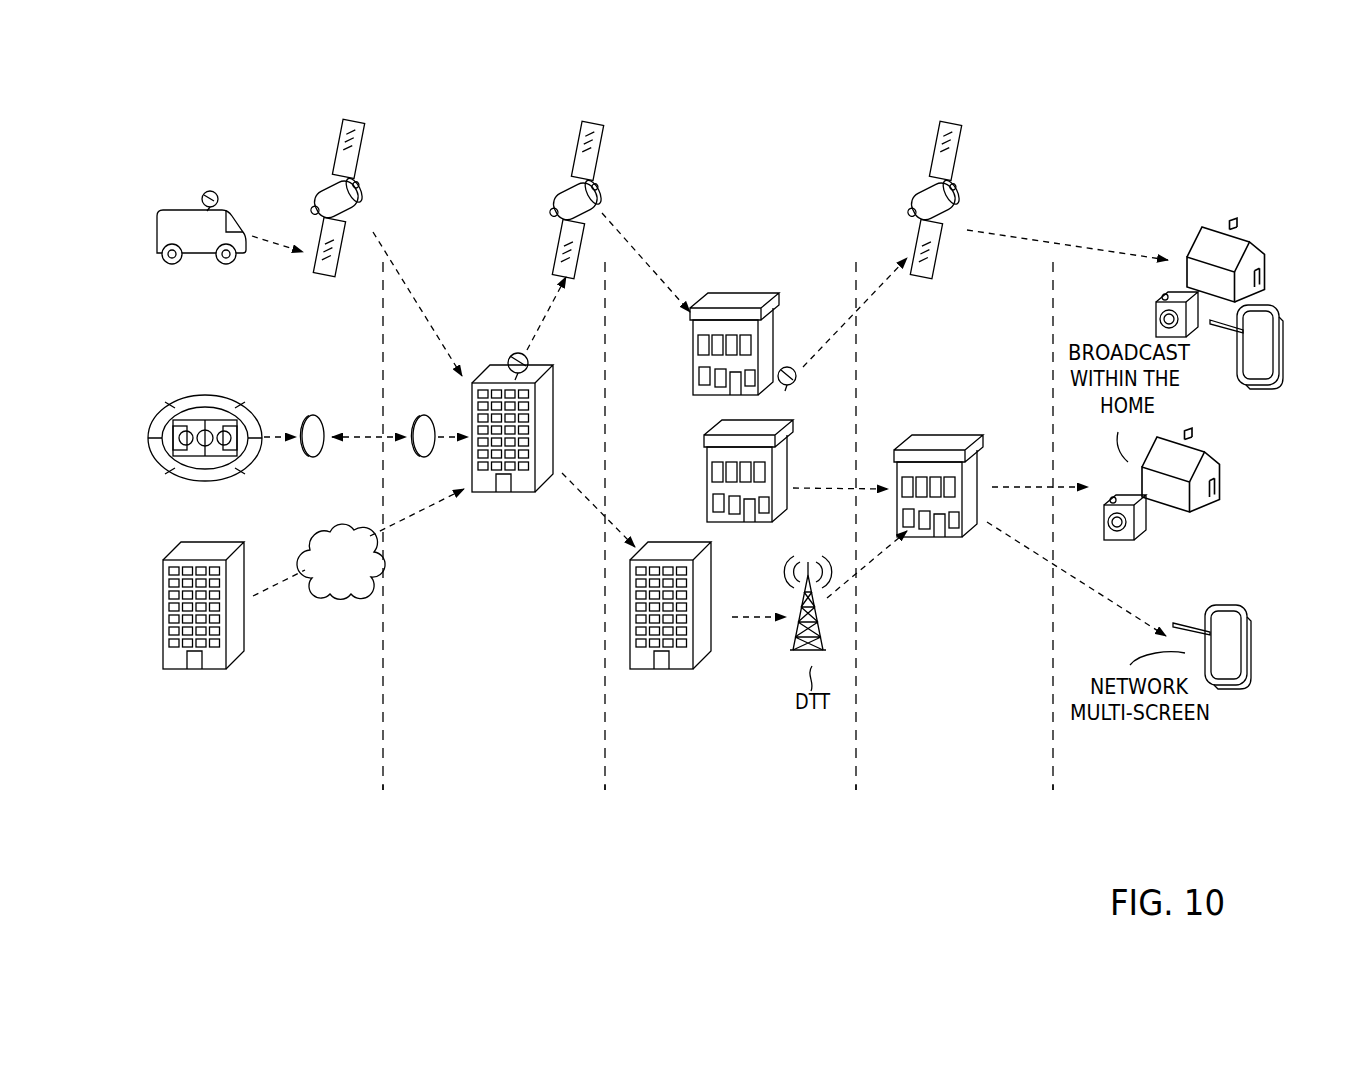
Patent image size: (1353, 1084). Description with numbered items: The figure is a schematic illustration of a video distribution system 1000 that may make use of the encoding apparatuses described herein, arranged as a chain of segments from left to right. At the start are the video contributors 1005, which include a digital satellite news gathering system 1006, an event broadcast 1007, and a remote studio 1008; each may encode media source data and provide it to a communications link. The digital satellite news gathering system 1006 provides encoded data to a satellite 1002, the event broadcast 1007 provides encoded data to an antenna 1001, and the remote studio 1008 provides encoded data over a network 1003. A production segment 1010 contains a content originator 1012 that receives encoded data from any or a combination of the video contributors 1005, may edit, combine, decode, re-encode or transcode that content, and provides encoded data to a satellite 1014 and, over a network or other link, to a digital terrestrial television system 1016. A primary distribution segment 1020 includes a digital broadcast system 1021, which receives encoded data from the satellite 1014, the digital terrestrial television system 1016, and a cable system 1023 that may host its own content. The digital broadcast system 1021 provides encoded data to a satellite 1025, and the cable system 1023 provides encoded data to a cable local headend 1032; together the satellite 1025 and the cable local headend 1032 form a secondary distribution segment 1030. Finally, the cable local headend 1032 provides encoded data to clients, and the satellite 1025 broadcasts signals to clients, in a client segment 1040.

The video distribution system 1000 is at (1150, 131).
The antenna 1001 is at (320, 413).
The satellite 1002 is at (360, 143).
The network 1003 is at (362, 584).
The video contributors 1005 is at (277, 787).
The digital satellite news gathering system 1006 is at (190, 209).
The event broadcast 1007 is at (203, 394).
The remote studio 1008 is at (212, 672).
The production segment 1010 is at (496, 787).
The content originator 1012 is at (492, 363).
The satellite 1014 is at (596, 146).
The digital terrestrial television system 1016 is at (676, 552).
The primary distribution segment 1020 is at (721, 787).
The digital broadcast system 1021 is at (773, 316).
The cable system 1023 is at (786, 477).
The satellite 1025 is at (955, 145).
The secondary distribution segment 1030 is at (941, 787).
The cable local headend 1032 is at (966, 458).
The client segment 1040 is at (1162, 787).